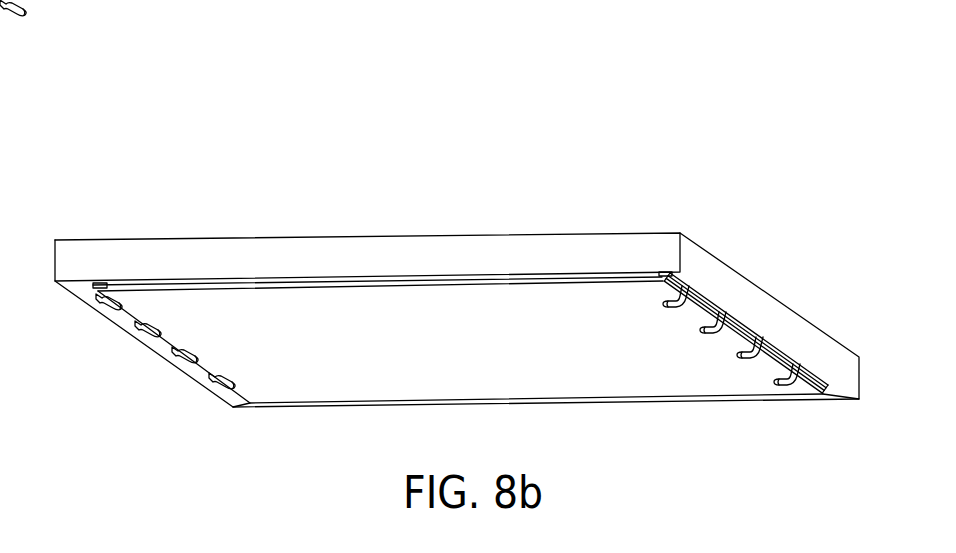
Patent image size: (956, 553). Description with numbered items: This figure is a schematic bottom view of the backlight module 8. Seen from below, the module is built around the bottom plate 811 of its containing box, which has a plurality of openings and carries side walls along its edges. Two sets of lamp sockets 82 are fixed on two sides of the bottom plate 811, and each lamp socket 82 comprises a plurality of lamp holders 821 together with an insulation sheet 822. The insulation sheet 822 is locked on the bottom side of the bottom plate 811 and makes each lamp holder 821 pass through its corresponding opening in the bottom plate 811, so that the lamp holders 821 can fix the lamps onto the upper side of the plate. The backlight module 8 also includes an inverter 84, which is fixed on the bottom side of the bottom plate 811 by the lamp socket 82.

The backlight module 8 is at (233, 119).
The inverter 84 is at (408, 285).
The bottom plate 811 is at (482, 255).
The lamp socket 82 is at (748, 167).
The lamp holder 821 is at (703, 288).
The insulation sheet 822 is at (667, 273).